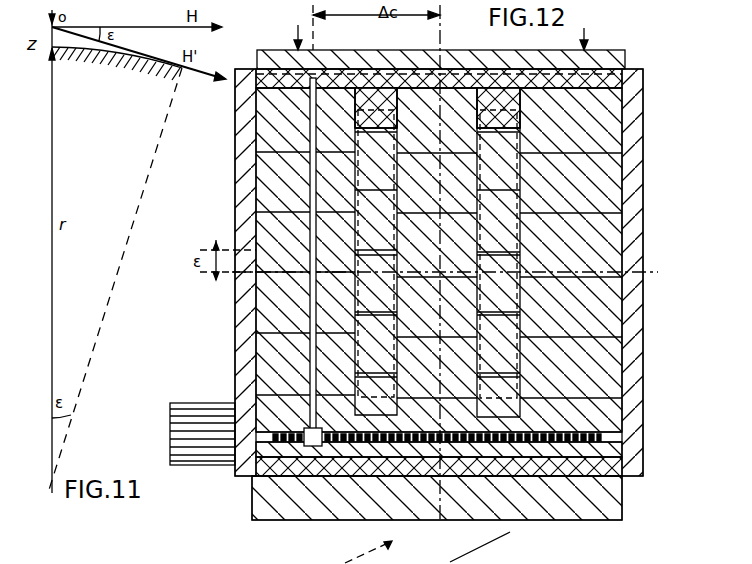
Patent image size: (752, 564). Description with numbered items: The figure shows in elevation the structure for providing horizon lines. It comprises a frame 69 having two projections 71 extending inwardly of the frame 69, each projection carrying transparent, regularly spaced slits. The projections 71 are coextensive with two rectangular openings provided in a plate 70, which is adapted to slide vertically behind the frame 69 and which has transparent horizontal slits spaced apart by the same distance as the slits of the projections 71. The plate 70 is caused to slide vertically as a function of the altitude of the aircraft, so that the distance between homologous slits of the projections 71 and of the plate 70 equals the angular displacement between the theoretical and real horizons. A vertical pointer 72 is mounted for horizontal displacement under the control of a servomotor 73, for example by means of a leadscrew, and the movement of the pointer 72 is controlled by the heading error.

The frame 69 is at (420, 272).
The plate 70 is at (423, 498).
The projections 71 is at (399, 318).
The vertical pointer 72 is at (308, 130).
The servomotor 73 is at (202, 423).